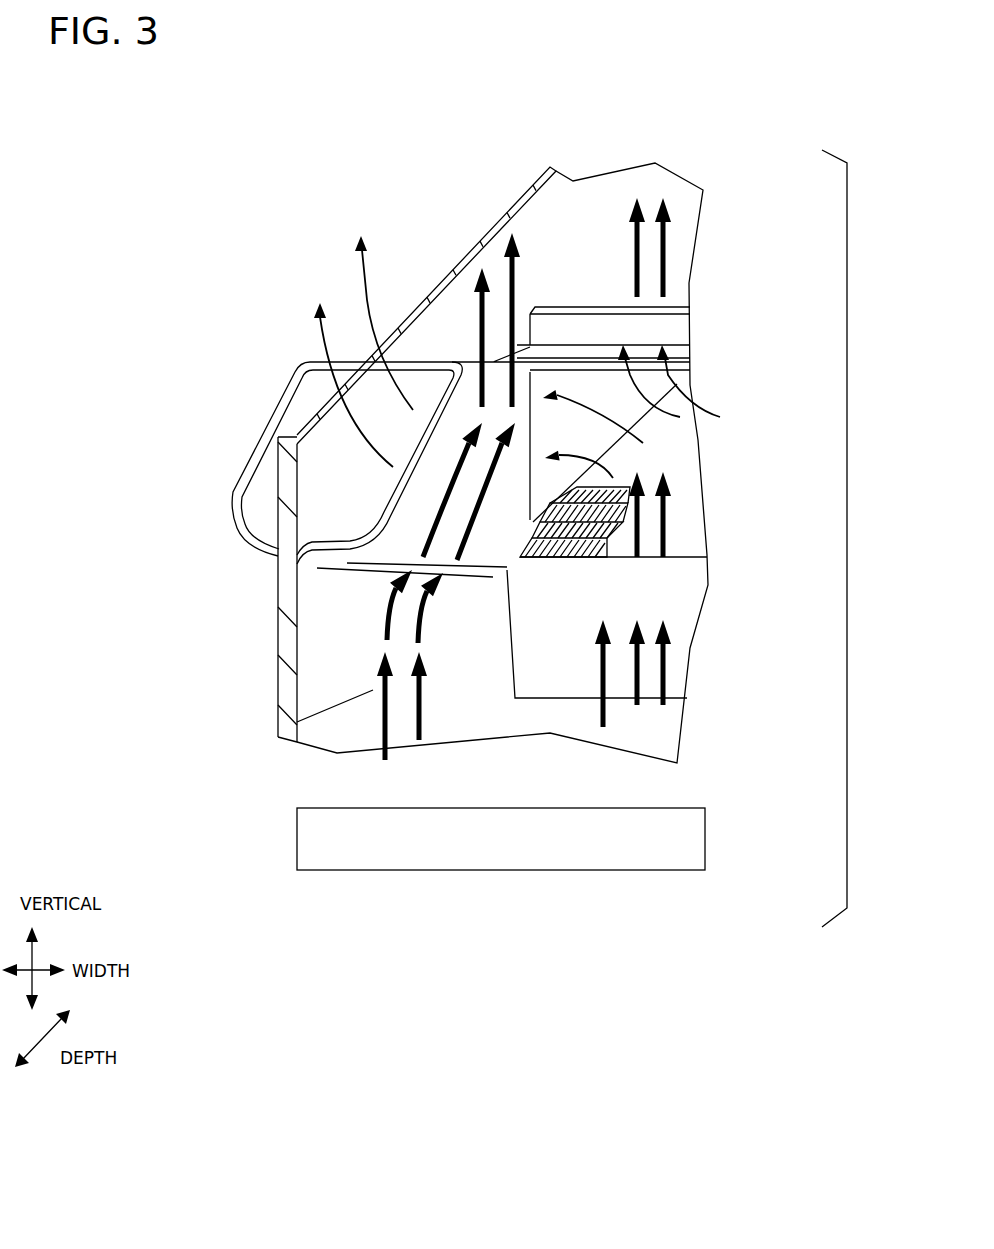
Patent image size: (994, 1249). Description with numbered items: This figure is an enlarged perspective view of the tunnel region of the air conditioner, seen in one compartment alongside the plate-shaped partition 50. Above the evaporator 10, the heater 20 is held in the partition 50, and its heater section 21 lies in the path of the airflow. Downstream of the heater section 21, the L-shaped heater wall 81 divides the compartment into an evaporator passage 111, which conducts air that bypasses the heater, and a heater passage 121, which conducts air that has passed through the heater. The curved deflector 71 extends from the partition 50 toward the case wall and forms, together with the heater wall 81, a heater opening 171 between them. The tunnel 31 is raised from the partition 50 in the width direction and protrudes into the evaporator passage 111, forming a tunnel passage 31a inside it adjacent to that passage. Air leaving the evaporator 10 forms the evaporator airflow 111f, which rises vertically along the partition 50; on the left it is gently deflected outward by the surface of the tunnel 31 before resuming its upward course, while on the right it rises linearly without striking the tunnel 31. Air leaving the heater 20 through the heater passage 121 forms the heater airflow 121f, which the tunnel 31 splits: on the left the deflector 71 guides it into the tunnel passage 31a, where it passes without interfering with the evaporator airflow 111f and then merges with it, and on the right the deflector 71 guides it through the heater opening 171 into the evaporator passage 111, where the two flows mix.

The evaporator 10 is at (503, 870).
The heater 20 is at (493, 463).
The first heater section 21 is at (707, 558).
The tunnel 31 is at (377, 540).
The tunnel passage 31a is at (403, 473).
The partition 50 is at (275, 596).
The deflector 71 is at (690, 322).
The heater wall 81 is at (690, 648).
The evaporator passage 111 is at (297, 721).
The evaporator airflow 111f is at (667, 250).
The heater passage 121 is at (683, 497).
The heater airflow 121f is at (312, 346).
The heater opening 171 is at (617, 457).